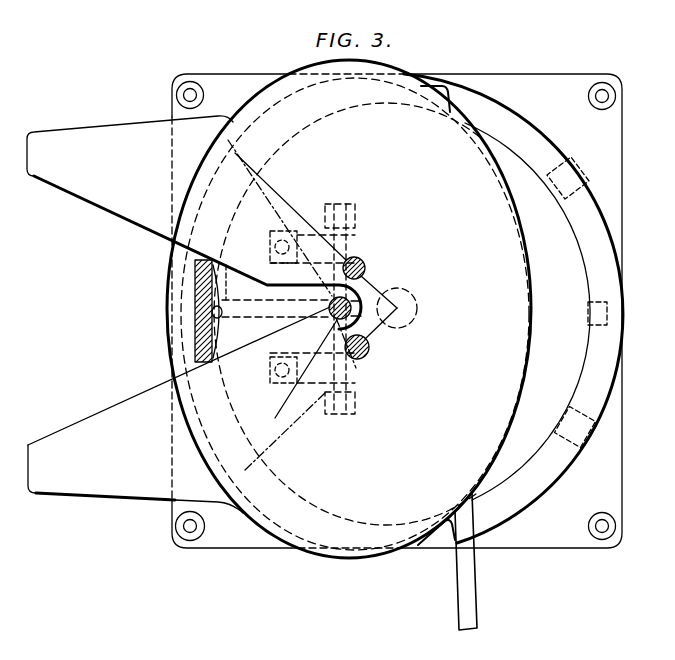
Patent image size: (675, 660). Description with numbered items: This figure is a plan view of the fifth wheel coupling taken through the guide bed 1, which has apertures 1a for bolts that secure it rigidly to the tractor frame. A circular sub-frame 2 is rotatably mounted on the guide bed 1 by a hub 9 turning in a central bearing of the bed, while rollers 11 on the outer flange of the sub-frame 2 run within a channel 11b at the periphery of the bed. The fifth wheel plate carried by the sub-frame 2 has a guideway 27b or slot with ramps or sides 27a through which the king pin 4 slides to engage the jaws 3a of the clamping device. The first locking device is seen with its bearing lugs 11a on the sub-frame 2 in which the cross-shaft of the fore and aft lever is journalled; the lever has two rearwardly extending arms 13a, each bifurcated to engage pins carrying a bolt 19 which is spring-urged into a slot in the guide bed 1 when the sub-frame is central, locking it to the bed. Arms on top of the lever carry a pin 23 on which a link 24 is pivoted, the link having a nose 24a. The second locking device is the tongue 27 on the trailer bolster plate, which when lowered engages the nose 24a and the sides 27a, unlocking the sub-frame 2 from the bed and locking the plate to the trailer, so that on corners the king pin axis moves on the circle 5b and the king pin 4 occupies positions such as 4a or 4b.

The guide bed 1 is at (555, 97).
The apertures 1a is at (190, 541).
The sub-frame 2 is at (558, 265).
The jaws 3a is at (330, 298).
The king pin 4 is at (363, 270).
The king pin position 4a is at (366, 266).
The king pin position 4b is at (370, 346).
The circle 5b is at (367, 357).
The hub 9 is at (410, 298).
The rollers 11 is at (600, 326).
The bearing lugs 11a is at (357, 213).
The channel 11b is at (556, 143).
The rearwardly extending arms 13a is at (315, 250).
The bolt 19 is at (290, 206).
The pin 23 is at (306, 369).
The link 24 is at (270, 262).
The nose 24a is at (270, 383).
The tongue 27 is at (195, 305).
The ramps or sides 27a is at (148, 390).
The guideway 27b is at (194, 222).